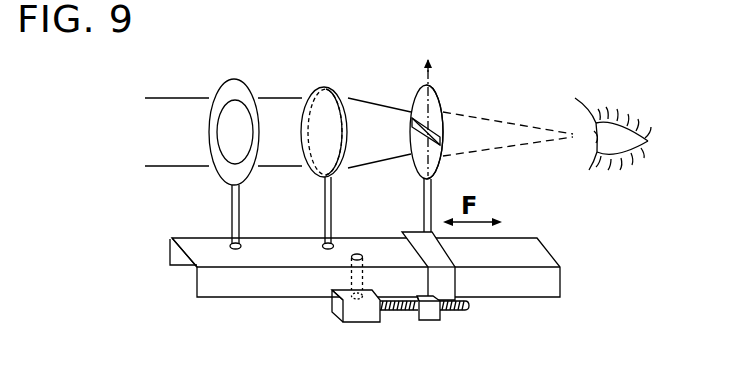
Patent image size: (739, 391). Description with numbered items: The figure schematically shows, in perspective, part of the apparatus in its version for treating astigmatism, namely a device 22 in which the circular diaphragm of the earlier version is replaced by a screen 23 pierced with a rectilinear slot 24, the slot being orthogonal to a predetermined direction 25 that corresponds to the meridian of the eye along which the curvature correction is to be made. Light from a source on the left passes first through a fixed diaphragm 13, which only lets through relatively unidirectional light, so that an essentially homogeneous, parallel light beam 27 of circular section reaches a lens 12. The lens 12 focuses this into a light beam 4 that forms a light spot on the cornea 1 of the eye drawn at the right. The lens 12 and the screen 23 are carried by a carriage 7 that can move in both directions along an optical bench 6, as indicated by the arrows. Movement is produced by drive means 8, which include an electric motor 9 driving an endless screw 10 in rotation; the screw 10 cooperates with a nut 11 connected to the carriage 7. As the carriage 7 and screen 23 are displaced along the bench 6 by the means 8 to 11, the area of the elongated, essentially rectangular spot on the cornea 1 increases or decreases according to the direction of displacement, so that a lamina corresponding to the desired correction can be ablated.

The cornea 1 is at (608, 123).
The light beam 4 is at (512, 136).
The optical bench 6 is at (240, 288).
The carriage 7 is at (455, 293).
The drive means 8 is at (396, 318).
The electric motor 9 is at (358, 321).
The endless screw 10 is at (466, 312).
The nut 11 is at (431, 320).
The lens 12 is at (308, 89).
The fixed diaphragm 13 is at (254, 94).
The device 22 is at (449, 87).
The screen 23 is at (436, 108).
The rectilinear slot 24 is at (411, 155).
The predetermined direction 25 is at (427, 66).
The parallel light beam 27 is at (157, 97).